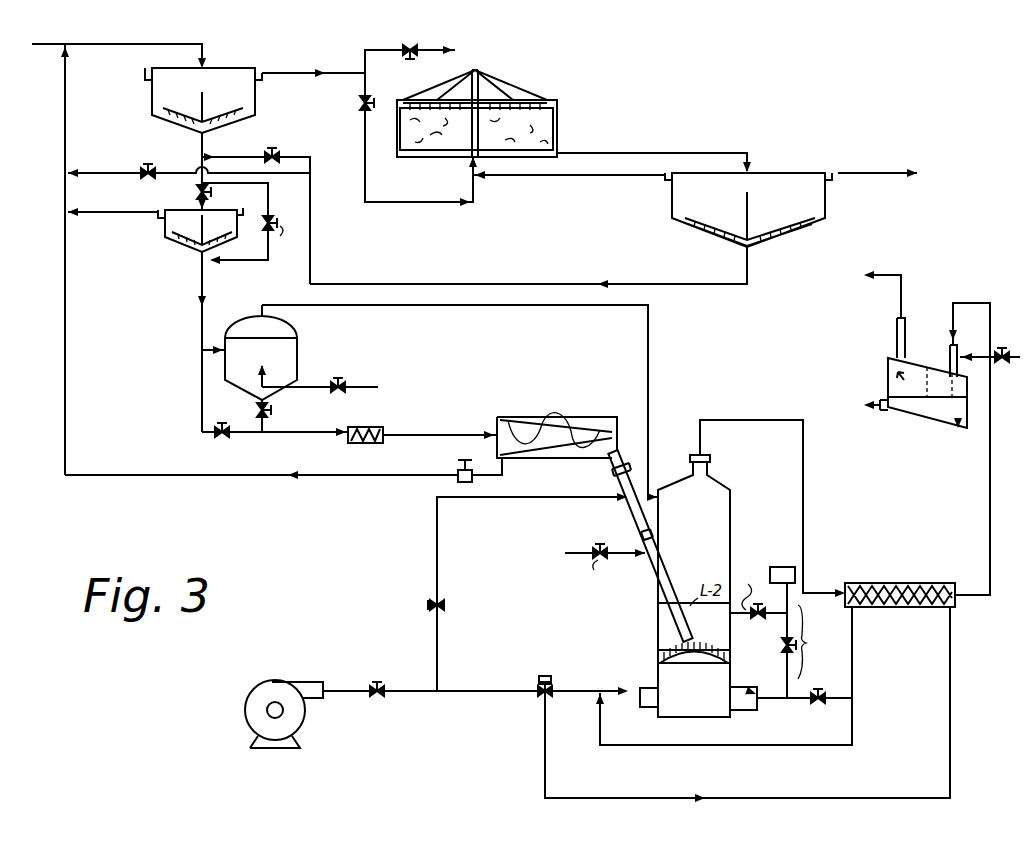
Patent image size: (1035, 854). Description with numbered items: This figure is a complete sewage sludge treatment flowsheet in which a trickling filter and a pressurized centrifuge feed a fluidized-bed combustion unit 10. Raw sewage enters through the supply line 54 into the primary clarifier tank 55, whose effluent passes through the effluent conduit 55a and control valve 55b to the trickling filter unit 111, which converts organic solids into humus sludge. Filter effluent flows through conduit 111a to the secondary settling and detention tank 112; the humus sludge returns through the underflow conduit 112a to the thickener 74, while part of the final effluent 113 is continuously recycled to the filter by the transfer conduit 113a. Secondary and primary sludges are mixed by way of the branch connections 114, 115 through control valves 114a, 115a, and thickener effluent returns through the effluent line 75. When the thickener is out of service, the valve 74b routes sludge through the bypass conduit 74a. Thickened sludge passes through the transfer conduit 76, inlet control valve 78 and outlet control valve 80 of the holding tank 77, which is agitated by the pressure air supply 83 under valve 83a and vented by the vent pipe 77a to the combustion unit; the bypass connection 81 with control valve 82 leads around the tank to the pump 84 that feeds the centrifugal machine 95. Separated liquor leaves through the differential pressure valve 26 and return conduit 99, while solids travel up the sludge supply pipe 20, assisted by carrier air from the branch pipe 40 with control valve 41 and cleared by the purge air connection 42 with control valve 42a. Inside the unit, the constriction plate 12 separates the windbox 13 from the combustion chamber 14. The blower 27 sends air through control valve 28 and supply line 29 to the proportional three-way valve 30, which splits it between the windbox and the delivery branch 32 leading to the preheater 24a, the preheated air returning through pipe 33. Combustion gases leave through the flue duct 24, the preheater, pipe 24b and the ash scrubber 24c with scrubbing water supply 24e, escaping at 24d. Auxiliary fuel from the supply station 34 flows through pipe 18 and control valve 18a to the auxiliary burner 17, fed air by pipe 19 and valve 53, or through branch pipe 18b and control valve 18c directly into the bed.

The combustion unit 10 is at (736, 514).
The constriction plate 12 is at (708, 664).
The windbox 13 is at (698, 712).
The combustion chamber 14 is at (706, 524).
The auxiliary burner 17 is at (738, 688).
The auxiliary fuel pipe 18 is at (808, 640).
The control valve 18a is at (778, 654).
The branch pipe 18b is at (780, 606).
The control valve 18c is at (750, 587).
The combustion air pipe 19 is at (770, 710).
The sludge supply pipe 20 is at (672, 579).
The flue duct 24 is at (804, 486).
The preheater 24a is at (870, 582).
The pipe 24b is at (978, 504).
The ash scrubber 24c is at (888, 388).
The atmospheric release 24d is at (884, 278).
The scrubbing water supply 24e is at (1006, 348).
The differential pressure valve 26 is at (452, 466).
The low pressure blower 27 is at (264, 682).
The main discharge control valve 28 is at (388, 704).
The supply line 29 is at (422, 696).
The proportional three-way valve 30 is at (552, 682).
The delivery branch 32 is at (630, 796).
The pipe 33 is at (650, 738).
The supply station 34 is at (792, 556).
The branch pipe 40 is at (438, 570).
The control valve 41 is at (442, 604).
The high pressure purge air connection 42 is at (576, 552).
The control valve 42a is at (611, 574).
The valve 53 is at (820, 704).
The raw sewage supply line 54 is at (96, 46).
The primary clarifier tank 55 is at (150, 102).
The effluent conduit 55a is at (336, 76).
The control valve 55b is at (356, 108).
The thickener 74 is at (164, 238).
The bypass conduit 74a is at (270, 210).
The valve 74b is at (298, 241).
The effluent line 75 is at (128, 216).
The transfer conduit 76 is at (204, 298).
The holding tank 77 is at (297, 358).
The vent pipe 77a is at (520, 318).
The control valve 78 is at (206, 346).
The control valve 80 is at (272, 412).
The bypass connection 81 is at (194, 408).
The control valve 82 is at (224, 442).
The pressure air supply 83 is at (308, 390).
The valve 83a is at (342, 382).
The pump 84 is at (372, 426).
The centrifugal machine 95 is at (570, 418).
The return conduit 99 is at (120, 476).
The trickling filter unit 111 is at (558, 130).
The conduit 111a is at (640, 152).
The secondary settling and detention tank 112 is at (672, 202).
The underflow conduit 112a is at (620, 284).
The final effluent 113 is at (862, 170).
The transfer conduit 113a is at (586, 182).
The branch connection 114 is at (290, 160).
The control valve 114a is at (274, 148).
The branch connection 115 is at (100, 172).
The control valve 115a is at (155, 170).